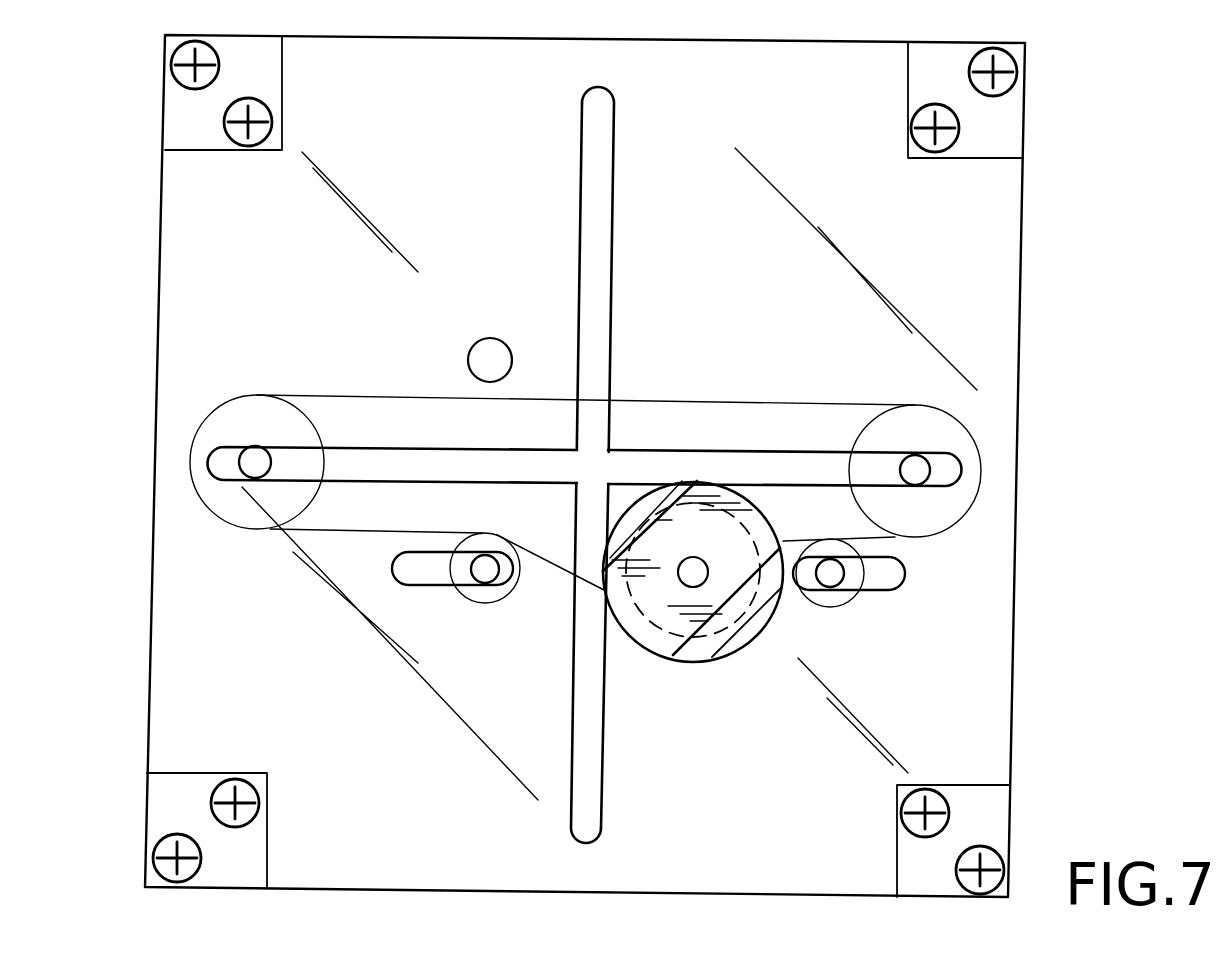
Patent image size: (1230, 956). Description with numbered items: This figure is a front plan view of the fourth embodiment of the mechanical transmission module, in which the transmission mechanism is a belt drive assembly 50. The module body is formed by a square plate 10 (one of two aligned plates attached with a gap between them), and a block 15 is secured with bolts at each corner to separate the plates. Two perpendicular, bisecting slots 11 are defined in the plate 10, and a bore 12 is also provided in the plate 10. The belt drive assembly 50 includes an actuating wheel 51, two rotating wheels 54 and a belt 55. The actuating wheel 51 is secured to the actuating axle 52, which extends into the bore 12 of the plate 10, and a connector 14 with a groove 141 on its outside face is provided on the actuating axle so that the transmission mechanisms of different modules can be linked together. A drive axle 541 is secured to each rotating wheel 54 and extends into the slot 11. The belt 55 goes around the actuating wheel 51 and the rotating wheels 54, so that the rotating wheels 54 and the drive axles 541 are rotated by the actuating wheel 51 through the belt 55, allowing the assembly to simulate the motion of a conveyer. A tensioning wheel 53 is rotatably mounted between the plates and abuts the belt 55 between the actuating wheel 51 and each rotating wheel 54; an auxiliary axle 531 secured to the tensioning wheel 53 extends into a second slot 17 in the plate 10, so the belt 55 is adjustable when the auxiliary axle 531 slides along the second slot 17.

The plate 10 is at (1000, 258).
The slot 11 is at (955, 470).
The bore 12 is at (472, 352).
The connector 14 is at (762, 633).
The groove 141 is at (710, 643).
The block 15 is at (1005, 129).
The second slot 17 is at (897, 572).
The belt drive assembly 50 is at (700, 262).
The actuating wheel 51 is at (650, 625).
The actuating axle 52 is at (695, 570).
The tensioning wheel 53 is at (858, 600).
The auxiliary axle 531 is at (831, 578).
The rotating wheel 54 is at (948, 437).
The drive axle 541 is at (925, 478).
The belt 55 is at (800, 405).